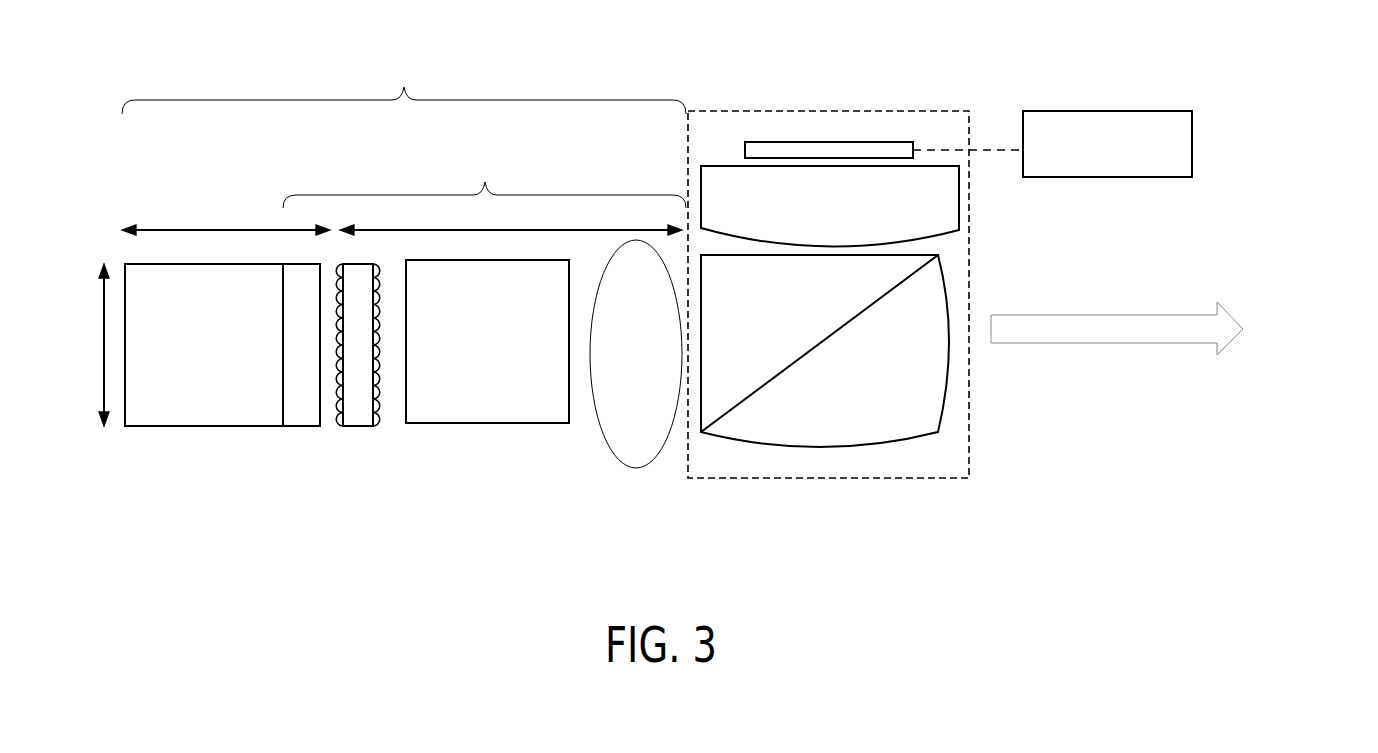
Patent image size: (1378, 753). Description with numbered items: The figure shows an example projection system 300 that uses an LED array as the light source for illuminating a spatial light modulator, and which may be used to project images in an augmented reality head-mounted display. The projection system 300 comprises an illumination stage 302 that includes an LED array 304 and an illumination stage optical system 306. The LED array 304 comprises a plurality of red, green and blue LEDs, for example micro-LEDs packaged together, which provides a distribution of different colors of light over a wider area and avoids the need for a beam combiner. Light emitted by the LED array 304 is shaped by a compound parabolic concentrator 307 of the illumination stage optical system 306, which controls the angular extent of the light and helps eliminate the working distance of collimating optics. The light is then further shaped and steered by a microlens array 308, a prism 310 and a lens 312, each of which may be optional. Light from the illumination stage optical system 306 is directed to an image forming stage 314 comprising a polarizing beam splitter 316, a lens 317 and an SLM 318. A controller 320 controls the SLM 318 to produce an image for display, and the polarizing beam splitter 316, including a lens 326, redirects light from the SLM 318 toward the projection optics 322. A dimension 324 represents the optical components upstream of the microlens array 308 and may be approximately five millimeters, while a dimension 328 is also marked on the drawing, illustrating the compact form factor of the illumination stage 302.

The projection system 300 is at (1283, 94).
The illumination stage 302 is at (421, 78).
The LED array 304 is at (221, 371).
The illumination stage optical system 306 is at (529, 175).
The compound parabolic concentrator 307 is at (297, 426).
The microlens array 308 is at (355, 426).
The prism 310 is at (504, 353).
The lens 312 is at (654, 366).
The image forming stage 314 is at (933, 111).
The polarizing beam splitter 316 is at (784, 331).
The lens 317 is at (852, 213).
The SLM 318 is at (855, 142).
The controller 320 is at (1172, 153).
The projection optics 322 is at (1227, 339).
The dimension 324 is at (245, 225).
The lens 326 is at (526, 226).
The height dimension 328 is at (94, 355).